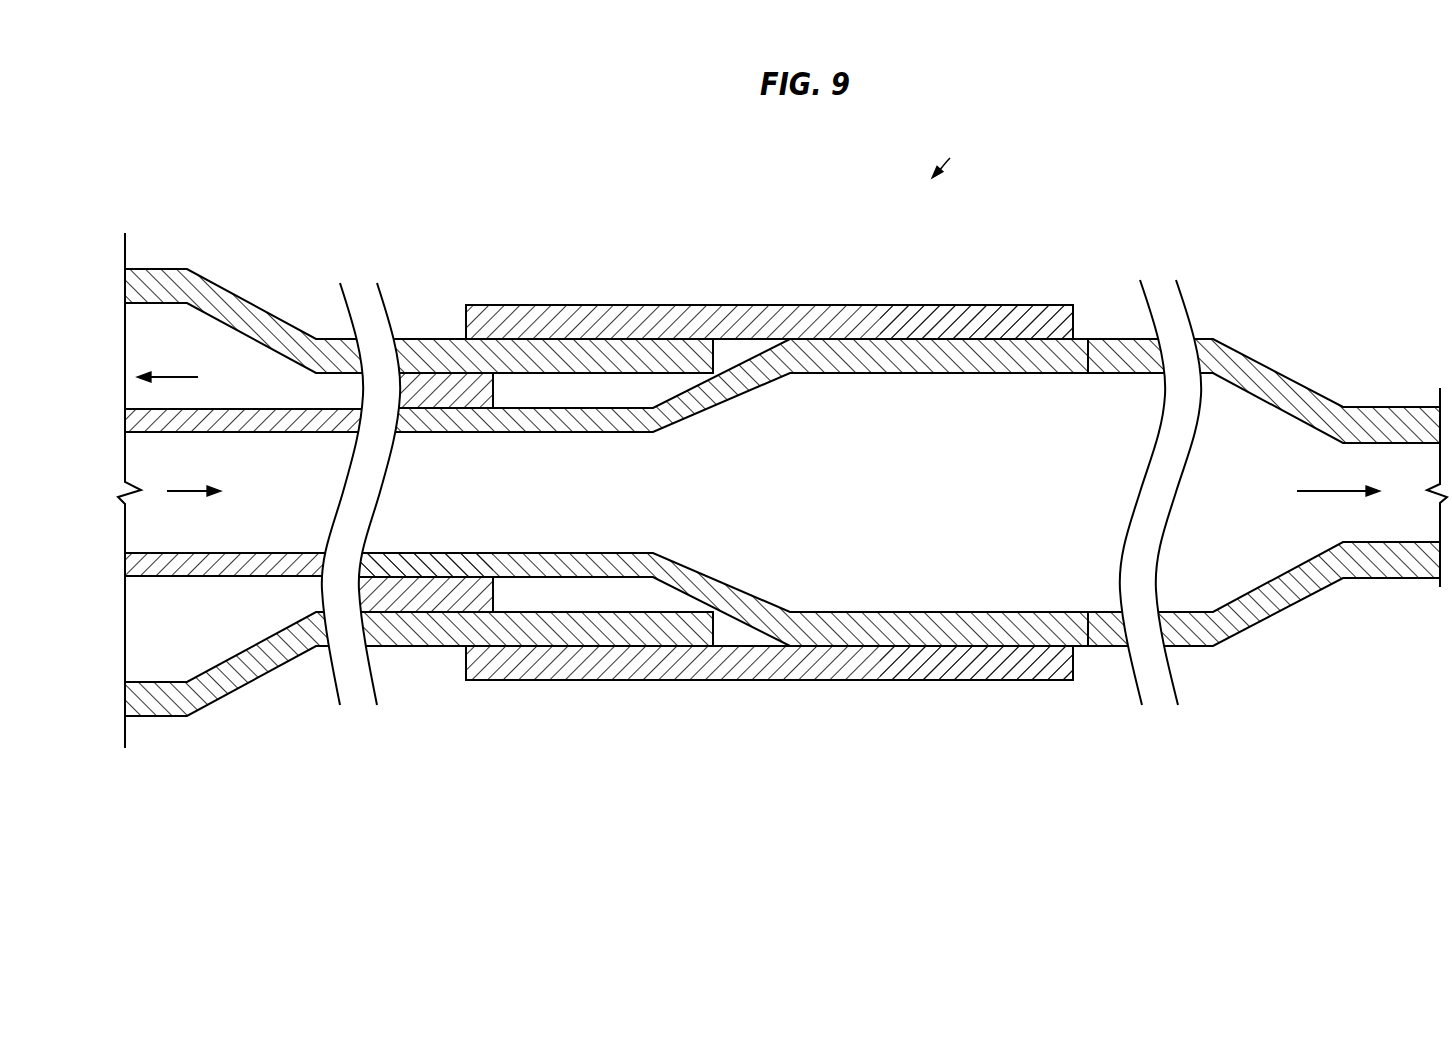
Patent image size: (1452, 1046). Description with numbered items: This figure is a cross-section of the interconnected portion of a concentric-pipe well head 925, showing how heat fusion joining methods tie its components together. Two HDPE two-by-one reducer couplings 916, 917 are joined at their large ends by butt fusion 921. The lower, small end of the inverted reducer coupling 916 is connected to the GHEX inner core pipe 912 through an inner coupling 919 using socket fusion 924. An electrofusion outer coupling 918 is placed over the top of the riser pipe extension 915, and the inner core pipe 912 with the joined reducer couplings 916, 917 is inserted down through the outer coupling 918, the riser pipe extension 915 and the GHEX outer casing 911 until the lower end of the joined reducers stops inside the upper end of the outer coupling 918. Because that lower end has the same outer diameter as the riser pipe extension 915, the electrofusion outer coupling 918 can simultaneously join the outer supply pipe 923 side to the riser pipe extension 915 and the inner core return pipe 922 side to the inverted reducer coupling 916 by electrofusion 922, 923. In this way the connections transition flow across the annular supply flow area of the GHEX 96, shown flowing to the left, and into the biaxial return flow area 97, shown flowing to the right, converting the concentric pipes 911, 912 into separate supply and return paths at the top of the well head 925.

The GHEX outer casing 911 is at (160, 268).
The inner core pipe 912 is at (252, 555).
The annular supply flow area of the GHEX 96 is at (180, 377).
The biaxial return flow area 97 is at (195, 490).
The well head 925 is at (950, 158).
The riser pipe extension 915 is at (570, 617).
The inverted reducer coupling 916 is at (718, 582).
The reducer coupling 917 is at (1285, 573).
The electrofusion outer coupling 918 is at (773, 681).
The inner coupling 919 is at (472, 587).
The butt fusion 921 is at (1093, 645).
The electrofusion (inner core return pipe joint) 922 is at (951, 655).
The electrofusion (outer supply pipe joint) 923 is at (603, 647).
The socket fusion 924 is at (433, 580).